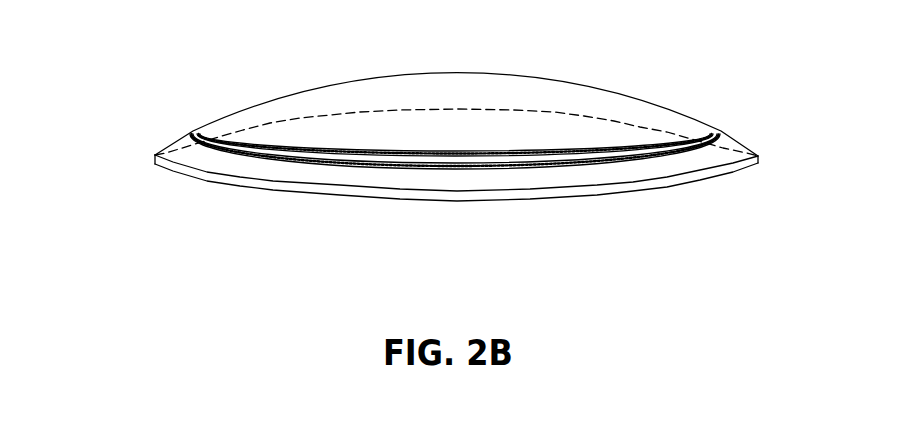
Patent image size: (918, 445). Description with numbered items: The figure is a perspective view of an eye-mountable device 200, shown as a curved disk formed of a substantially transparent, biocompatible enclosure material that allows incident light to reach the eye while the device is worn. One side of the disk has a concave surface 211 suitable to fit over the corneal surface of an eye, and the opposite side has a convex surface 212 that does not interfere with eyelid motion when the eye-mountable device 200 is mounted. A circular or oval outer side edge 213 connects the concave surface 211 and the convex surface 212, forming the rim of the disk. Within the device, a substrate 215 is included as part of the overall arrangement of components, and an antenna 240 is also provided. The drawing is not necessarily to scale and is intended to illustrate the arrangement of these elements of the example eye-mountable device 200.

The eye-mountable device 200 is at (452, 140).
The concave surface 211 is at (688, 185).
The convex surface 212 is at (245, 78).
The outer side edge 213 is at (593, 194).
The substrate 215 is at (198, 143).
The antenna 240 is at (712, 131).